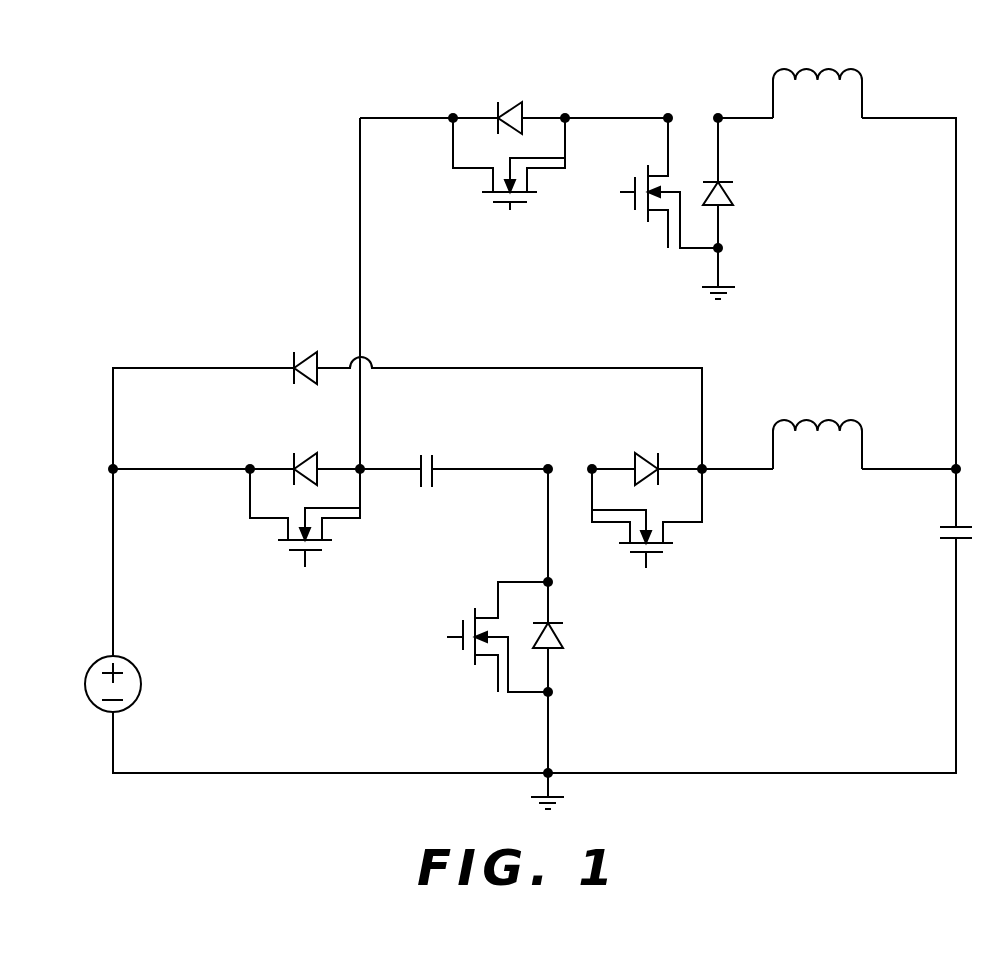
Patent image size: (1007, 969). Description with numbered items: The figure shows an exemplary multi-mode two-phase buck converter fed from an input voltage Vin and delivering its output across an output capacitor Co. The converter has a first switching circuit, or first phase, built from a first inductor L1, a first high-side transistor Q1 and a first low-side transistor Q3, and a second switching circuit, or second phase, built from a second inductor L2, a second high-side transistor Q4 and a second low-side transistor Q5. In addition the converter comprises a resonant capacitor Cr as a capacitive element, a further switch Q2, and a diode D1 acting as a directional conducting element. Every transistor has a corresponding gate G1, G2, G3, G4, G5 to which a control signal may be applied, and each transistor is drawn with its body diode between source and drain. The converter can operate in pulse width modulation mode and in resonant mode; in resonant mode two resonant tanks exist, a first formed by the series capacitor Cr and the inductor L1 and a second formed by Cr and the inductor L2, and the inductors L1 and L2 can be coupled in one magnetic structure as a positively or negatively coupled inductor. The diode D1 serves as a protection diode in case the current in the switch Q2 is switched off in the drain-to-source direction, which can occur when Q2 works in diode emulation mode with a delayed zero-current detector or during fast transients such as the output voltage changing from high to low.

The input voltage Vin is at (139, 684).
The diode D1 is at (308, 354).
The first high-side transistor Q1 is at (305, 517).
The switch Q2 is at (647, 518).
The first low-side transistor Q3 is at (509, 637).
The second high-side transistor Q4 is at (509, 167).
The second low-side transistor Q5 is at (679, 183).
The gate G1 is at (305, 576).
The gate G2 is at (646, 577).
The gate G3 is at (441, 637).
The gate G4 is at (510, 227).
The gate G5 is at (612, 192).
The resonant capacitor Cr is at (426, 456).
The output capacitor Co is at (946, 519).
The first inductor L1 is at (817, 430).
The second inductor L2 is at (817, 77).